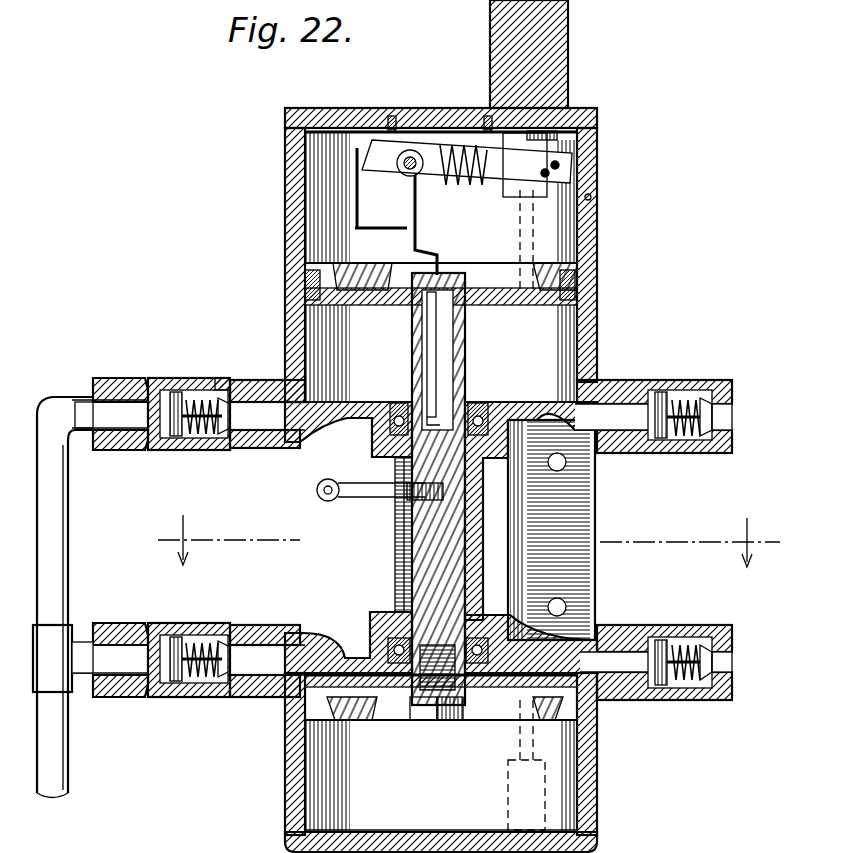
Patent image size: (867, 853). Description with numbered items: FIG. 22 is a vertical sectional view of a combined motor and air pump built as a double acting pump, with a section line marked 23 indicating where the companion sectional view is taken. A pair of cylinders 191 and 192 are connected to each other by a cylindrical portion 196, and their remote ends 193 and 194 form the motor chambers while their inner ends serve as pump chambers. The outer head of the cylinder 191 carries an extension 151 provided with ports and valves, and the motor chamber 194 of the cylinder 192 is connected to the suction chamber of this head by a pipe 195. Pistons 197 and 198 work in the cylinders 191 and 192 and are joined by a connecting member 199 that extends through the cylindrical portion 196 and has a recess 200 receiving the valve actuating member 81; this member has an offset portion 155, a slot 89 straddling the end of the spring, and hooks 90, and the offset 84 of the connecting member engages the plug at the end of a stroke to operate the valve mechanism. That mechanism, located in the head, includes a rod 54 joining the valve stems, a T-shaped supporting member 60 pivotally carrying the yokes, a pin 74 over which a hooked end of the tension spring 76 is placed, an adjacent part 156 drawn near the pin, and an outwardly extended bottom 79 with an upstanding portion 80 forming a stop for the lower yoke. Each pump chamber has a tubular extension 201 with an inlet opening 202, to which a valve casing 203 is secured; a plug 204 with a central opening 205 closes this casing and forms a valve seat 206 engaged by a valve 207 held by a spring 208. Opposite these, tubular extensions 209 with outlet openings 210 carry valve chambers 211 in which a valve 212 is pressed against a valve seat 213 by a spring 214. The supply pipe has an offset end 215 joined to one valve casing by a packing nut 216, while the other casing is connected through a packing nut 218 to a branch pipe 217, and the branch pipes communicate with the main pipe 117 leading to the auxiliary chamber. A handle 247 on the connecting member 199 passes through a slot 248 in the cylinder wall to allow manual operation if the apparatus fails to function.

The extension 151 is at (556, 74).
The piston 197 is at (590, 235).
The cylinder 191 is at (597, 338).
The remote end of cylinder 193 is at (592, 196).
The hooks 90 is at (396, 143).
The supporting member 60 is at (437, 145).
The pin 74 is at (600, 166).
The insulating block 156 is at (565, 156).
The rod 54 is at (523, 176).
The slot 89 is at (418, 176).
The tension spring 76 is at (468, 188).
The outwardly extended bottom of supporting member 79 is at (358, 205).
The upstanding portion 80 is at (380, 229).
The offset portion 155 is at (431, 244).
The cylindrical portion 196 is at (467, 567).
The recess 200 is at (448, 380).
The member 81 is at (438, 350).
The tubular extension 201 is at (597, 443).
The offset 84 is at (434, 417).
The connecting member 199 is at (420, 536).
The slot 248 is at (407, 557).
The handle 247 is at (312, 490).
The piston 198 is at (580, 740).
The cylinder 192 is at (590, 778).
The pipe 195 is at (595, 800).
The motor chamber 194 is at (592, 828).
The tubular extension 209 is at (273, 380).
The outlet opening 210 is at (284, 432).
The valve chamber 211 is at (193, 378).
The valve 212 is at (228, 380).
The valve seat 213 is at (231, 457).
The spring 214 is at (190, 440).
The packing nut 216 is at (118, 378).
The packing nut 218 is at (137, 607).
The branch pipe 217 is at (85, 630).
The offset end 215 is at (72, 400).
The main pipe 117 is at (68, 536).
The valve casing 203 is at (703, 383).
The plug 204 is at (733, 390).
The inlet opening 202 is at (600, 407).
The central opening 205 is at (730, 420).
The valve 207 is at (700, 433).
The spring 208 is at (682, 396).
The valve seat 206 is at (710, 440).
The section line 23- 23 is at (468, 541).